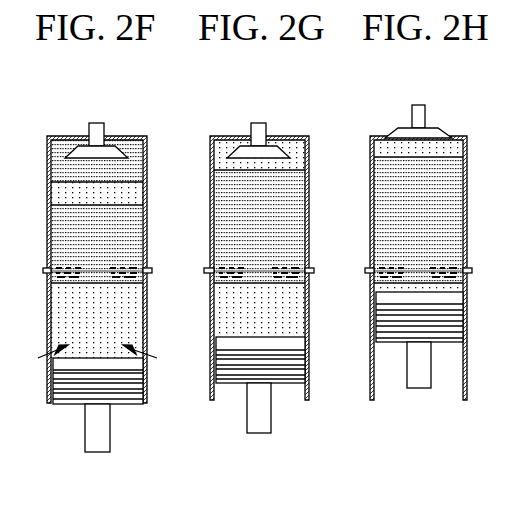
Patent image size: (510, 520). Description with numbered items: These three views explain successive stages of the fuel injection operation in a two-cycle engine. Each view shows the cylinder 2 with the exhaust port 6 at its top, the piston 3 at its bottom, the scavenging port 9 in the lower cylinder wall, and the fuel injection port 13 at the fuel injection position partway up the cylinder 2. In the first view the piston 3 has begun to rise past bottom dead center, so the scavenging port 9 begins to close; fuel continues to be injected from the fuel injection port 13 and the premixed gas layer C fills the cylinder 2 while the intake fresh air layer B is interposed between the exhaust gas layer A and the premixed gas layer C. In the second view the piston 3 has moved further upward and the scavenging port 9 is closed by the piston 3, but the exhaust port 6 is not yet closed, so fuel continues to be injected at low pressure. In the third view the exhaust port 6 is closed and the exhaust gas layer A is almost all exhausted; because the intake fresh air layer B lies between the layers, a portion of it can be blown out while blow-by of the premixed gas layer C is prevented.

In FIG. 2F, the cylinder 2 is at (47, 170).
In FIG. 2G, the cylinder 2 is at (210, 207).
In FIG. 2H, the cylinder 2 is at (370, 207).
In FIG. 2F, the piston 3 is at (70, 403).
In FIG. 2G, the piston 3 is at (232, 384).
In FIG. 2H, the piston 3 is at (392, 343).
In FIG. 2F, the exhaust port 6 is at (68, 136).
In FIG. 2G, the exhaust port 6 is at (231, 136).
In FIG. 2H, the exhaust port 6 is at (391, 136).
In FIG. 2F, the scavenging port 9 is at (52, 351).
In FIG. 2G, the scavenging port 9 is at (212, 350).
In FIG. 2H, the scavenging port 9 is at (372, 350).
In FIG. 2F, the fuel injection port 13 is at (43, 273).
In FIG. 2G, the fuel injection port 13 is at (207, 273).
In FIG. 2H, the fuel injection port 13 is at (367, 273).
In FIG. 2F, the exhaust gas layer A is at (118, 167).
In FIG. 2F, the intake fresh air layer B is at (72, 192).
In FIG. 2G, the intake fresh air layer B is at (295, 150).
In FIG. 2H, the intake fresh air layer B is at (455, 150).
In FIG. 2F, the premixed gas layer C is at (108, 250).
In FIG. 2G, the premixed gas layer C is at (271, 241).
In FIG. 2H, the premixed gas layer C is at (431, 230).